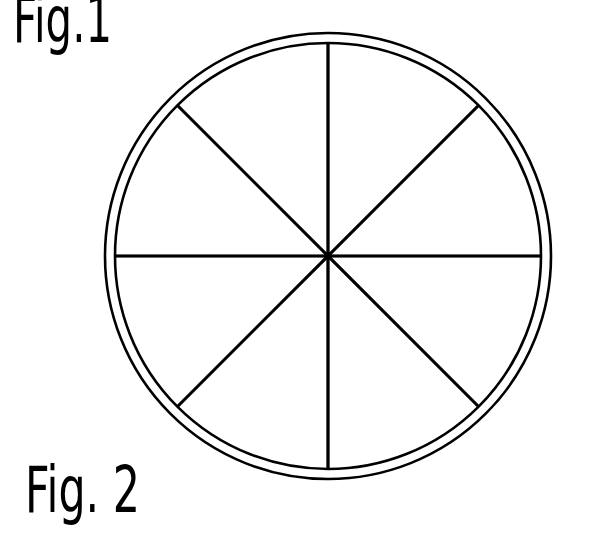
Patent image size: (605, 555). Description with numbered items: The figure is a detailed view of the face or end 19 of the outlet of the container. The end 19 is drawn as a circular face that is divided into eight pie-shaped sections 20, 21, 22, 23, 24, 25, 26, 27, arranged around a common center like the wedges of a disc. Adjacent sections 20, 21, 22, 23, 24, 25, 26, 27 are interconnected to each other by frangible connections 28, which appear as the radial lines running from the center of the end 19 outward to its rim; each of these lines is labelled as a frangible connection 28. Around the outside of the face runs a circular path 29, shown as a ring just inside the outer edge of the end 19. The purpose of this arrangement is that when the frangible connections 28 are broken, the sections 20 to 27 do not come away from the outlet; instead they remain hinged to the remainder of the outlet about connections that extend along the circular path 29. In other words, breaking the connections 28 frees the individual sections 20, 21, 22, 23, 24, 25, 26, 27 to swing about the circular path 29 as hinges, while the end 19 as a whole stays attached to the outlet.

The end 19 is at (481, 58).
The circular path 29 is at (383, 38).
The section 20 is at (402, 123).
The section 21 is at (451, 220).
The section 22 is at (483, 317).
The section 23 is at (396, 392).
The section 24 is at (296, 397).
The section 25 is at (203, 320).
The section 26 is at (203, 223).
The section 27 is at (282, 125).
The frangible connections 28 is at (328, 173).